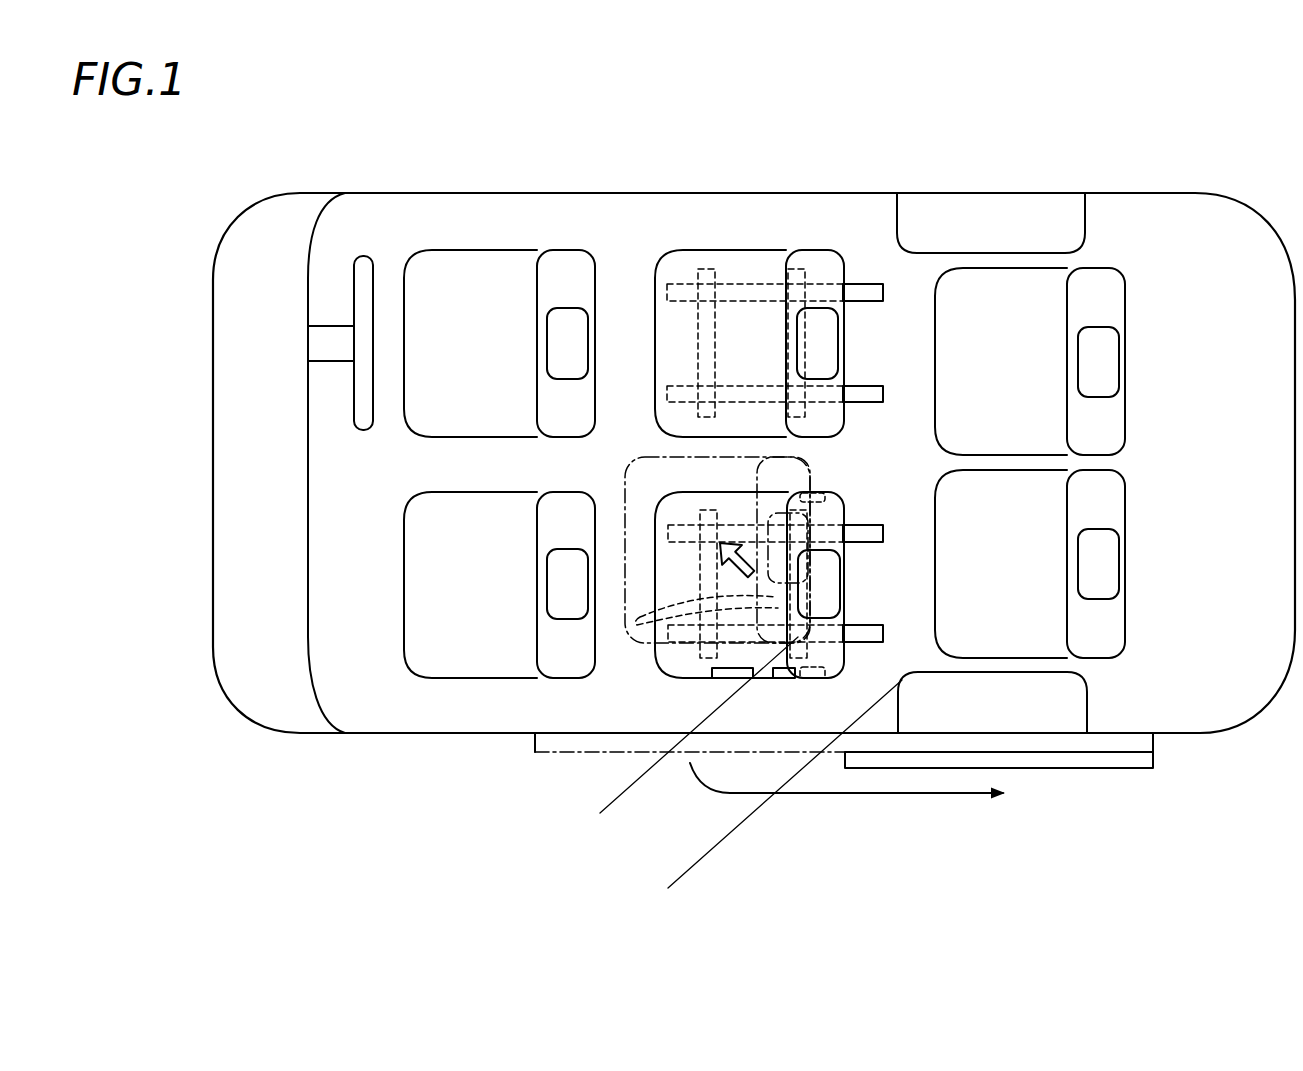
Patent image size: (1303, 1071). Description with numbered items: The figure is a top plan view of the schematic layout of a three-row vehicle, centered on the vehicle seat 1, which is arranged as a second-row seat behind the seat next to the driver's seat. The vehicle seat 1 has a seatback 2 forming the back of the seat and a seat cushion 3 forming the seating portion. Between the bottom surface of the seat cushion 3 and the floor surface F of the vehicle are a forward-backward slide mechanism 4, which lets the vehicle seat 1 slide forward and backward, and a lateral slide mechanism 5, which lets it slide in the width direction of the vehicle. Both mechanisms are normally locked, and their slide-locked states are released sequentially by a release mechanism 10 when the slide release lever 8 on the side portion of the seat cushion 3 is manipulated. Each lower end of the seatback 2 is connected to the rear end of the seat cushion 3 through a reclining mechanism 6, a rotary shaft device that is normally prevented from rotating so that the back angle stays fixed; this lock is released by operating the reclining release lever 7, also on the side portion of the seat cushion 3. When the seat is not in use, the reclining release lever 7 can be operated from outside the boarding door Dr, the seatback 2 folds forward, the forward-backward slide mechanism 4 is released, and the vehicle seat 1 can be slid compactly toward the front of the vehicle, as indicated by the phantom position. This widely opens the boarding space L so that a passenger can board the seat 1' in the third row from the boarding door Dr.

The vehicle seat 1 is at (759, 568).
The seat in a third row 1' is at (1057, 450).
The seatback 2 is at (828, 657).
The seat cushion 3 is at (675, 563).
The forward-backward slide mechanism 4 is at (860, 542).
The lateral slide mechanism 5 is at (640, 619).
The reclining mechanism 6 is at (823, 492).
The reclining release lever 7 is at (782, 680).
The slide release lever 8 is at (668, 667).
The release mechanism 10 is at (685, 698).
The floor surface F is at (813, 215).
The boarding space L is at (608, 806).
The boarding door Dr is at (803, 740).